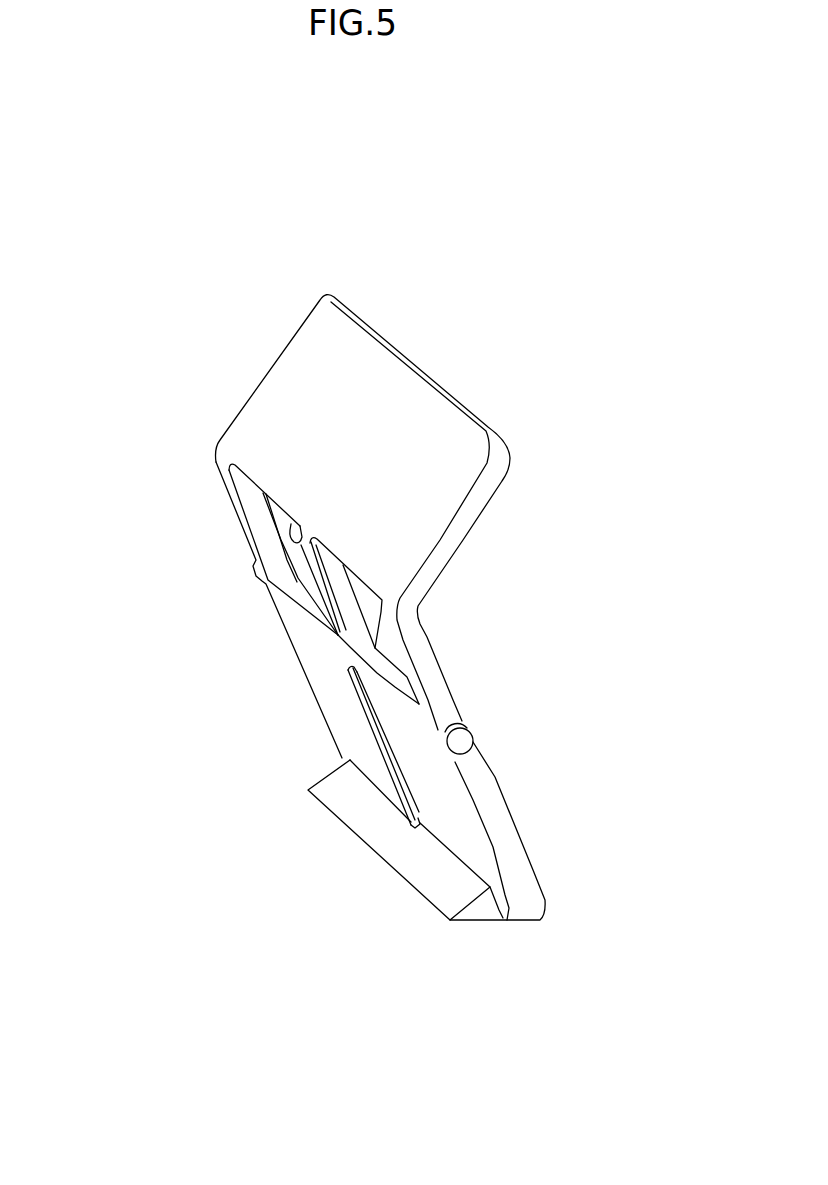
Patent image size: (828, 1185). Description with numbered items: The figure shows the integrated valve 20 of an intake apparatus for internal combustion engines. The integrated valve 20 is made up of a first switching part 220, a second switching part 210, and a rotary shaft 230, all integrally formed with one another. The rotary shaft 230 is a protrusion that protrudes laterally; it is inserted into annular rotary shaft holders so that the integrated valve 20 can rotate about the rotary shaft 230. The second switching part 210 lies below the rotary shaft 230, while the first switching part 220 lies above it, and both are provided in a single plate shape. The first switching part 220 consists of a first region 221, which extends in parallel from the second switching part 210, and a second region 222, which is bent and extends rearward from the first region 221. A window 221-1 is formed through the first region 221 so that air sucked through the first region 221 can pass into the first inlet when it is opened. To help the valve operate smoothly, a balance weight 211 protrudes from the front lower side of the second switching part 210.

The integrated valve 20 is at (95, 172).
The first switching part 220 is at (400, 232).
The first region 221 is at (230, 500).
The window 221-1 is at (293, 533).
The second region 222 is at (362, 367).
The second switching part 210 is at (515, 855).
The balance weight 211 is at (395, 853).
The rotary shaft 230 is at (461, 742).